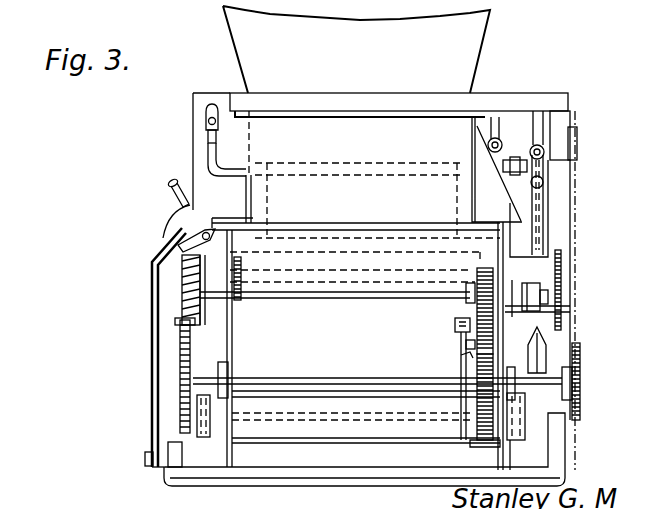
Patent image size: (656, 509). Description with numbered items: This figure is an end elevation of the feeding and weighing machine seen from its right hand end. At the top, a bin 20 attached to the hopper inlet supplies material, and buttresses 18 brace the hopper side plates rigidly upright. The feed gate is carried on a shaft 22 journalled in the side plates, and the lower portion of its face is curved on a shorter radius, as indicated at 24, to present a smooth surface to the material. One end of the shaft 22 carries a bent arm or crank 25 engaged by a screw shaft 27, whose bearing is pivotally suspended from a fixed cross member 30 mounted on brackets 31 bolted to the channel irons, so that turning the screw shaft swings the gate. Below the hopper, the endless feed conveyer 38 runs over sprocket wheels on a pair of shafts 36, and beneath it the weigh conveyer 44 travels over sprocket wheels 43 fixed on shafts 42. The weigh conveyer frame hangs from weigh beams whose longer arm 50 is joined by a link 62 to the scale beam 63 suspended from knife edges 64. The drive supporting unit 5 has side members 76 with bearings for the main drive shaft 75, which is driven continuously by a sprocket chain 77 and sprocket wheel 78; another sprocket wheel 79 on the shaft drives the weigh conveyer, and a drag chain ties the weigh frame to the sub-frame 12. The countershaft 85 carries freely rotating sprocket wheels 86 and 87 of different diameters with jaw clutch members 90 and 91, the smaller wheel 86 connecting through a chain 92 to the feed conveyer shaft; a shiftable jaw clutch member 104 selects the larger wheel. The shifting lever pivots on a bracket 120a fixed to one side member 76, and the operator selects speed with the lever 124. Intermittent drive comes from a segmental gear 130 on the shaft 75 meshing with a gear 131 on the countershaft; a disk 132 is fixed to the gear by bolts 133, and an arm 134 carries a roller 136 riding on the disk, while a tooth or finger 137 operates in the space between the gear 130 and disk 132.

The drive supporting unit 5 is at (497, 451).
The sub-frame 12 is at (275, 484).
The buttresses 18 is at (477, 195).
The bin 20 is at (356, 49).
The shaft 22 is at (245, 178).
The curved portion of gate face 24 is at (394, 167).
The bent arm or crank 25 is at (226, 170).
The screw shaft 27 is at (205, 122).
The cross member 30 is at (558, 99).
The brackets 31 is at (540, 123).
The shafts 36 is at (333, 274).
The endless conveyer 38 is at (393, 256).
The shafts 42 is at (320, 422).
The sprocket wheels 43 is at (521, 441).
The endless conveyer 44 is at (313, 446).
The longer arm 50 is at (541, 355).
The link 62 is at (545, 202).
The scale beam 63 is at (506, 148).
The knife edges 64 is at (498, 139).
The main drive shaft 75 is at (229, 380).
The side members 76 is at (233, 346).
The sprocket chain 77 is at (577, 245).
The sprocket wheel 78 is at (581, 364).
The sprocket wheel 79 is at (179, 398).
The countershaft 85 is at (331, 300).
The sprocket wheel 86 is at (151, 277).
The sprocket wheel 87 is at (562, 277).
The jaw clutch member 90 is at (150, 285).
The jaw clutch member 91 is at (562, 311).
The chain 92 is at (172, 250).
The shiftable jaw clutch member 104 is at (516, 279).
The bracket 120a is at (243, 263).
The lever 124 is at (172, 209).
The segmental or interrupted gear 130 is at (470, 446).
The gear 131 is at (476, 270).
The disk 132 is at (476, 405).
The bolts 133 is at (466, 346).
The arm 134 is at (456, 323).
The roller 136 is at (462, 334).
The tooth or finger 137 is at (463, 360).